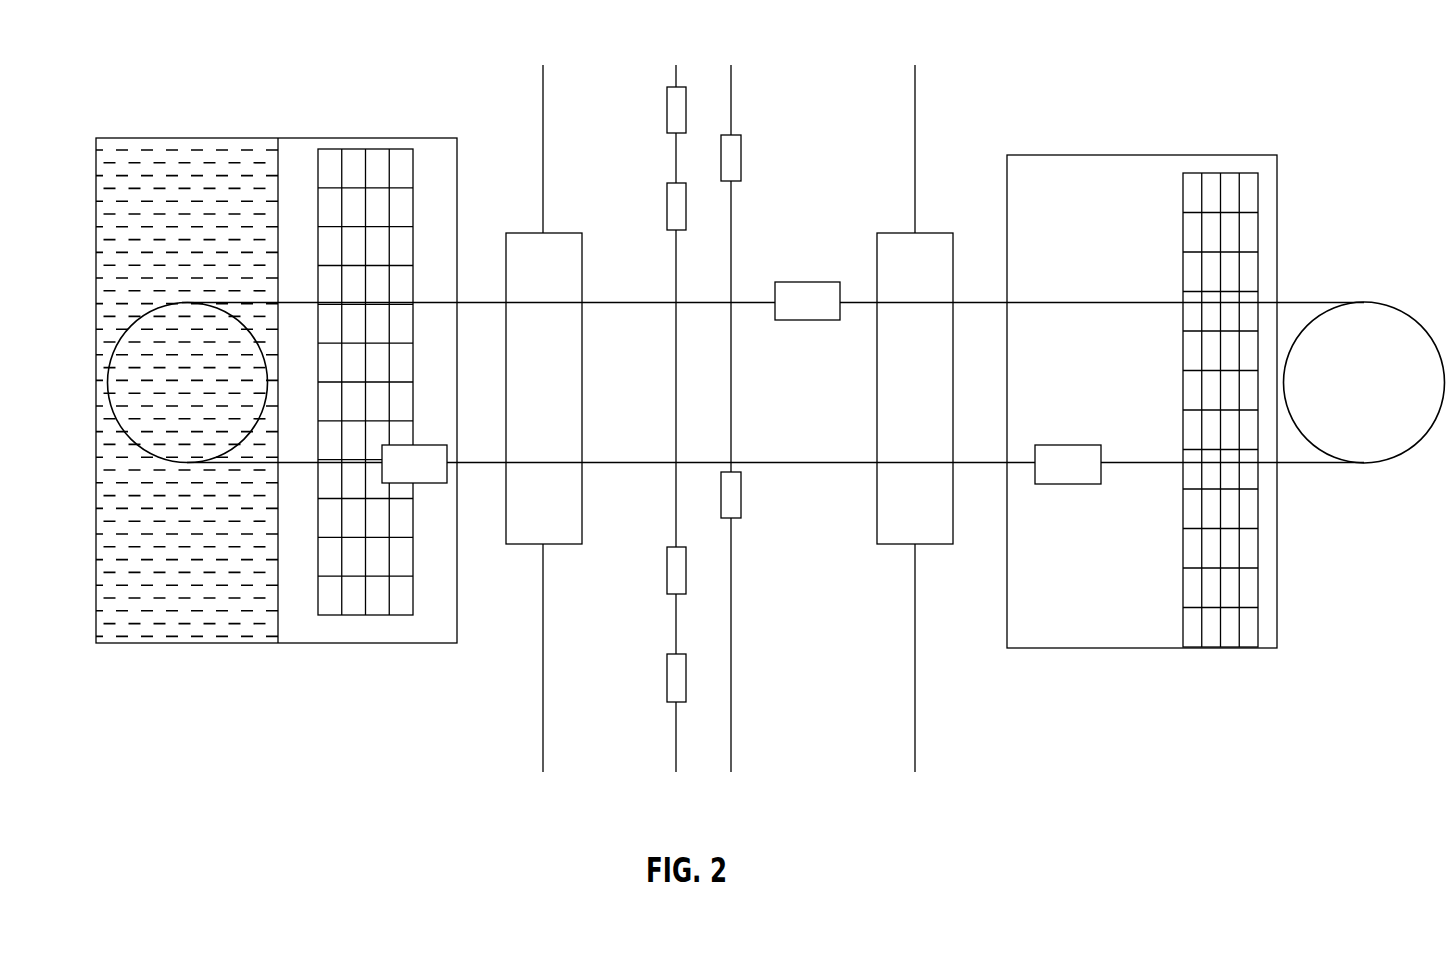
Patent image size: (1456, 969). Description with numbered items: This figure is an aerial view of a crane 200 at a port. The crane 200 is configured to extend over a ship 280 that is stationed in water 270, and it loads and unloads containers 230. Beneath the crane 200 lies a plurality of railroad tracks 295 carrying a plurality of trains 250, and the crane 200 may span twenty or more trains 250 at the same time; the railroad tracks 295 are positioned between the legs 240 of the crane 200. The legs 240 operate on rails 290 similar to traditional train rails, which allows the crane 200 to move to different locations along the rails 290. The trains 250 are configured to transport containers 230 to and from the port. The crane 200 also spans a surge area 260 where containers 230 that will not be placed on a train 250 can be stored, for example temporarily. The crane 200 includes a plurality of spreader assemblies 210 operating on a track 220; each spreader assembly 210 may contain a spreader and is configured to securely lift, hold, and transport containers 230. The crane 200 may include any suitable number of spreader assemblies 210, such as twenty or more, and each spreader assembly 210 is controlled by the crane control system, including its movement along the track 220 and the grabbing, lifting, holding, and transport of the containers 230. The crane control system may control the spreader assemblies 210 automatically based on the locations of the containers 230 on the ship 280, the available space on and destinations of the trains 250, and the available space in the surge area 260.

The crane 200 is at (155, 50).
The spreader assembly 210 is at (813, 282).
The track 220 is at (1060, 302).
The container 230 is at (370, 618).
The leg 240 is at (935, 233).
The train 250 is at (667, 110).
The surge area 260 is at (1105, 648).
The water 270 is at (143, 628).
The ship 280 is at (335, 137).
The rail 290 is at (915, 672).
The railroad track 295 is at (731, 628).